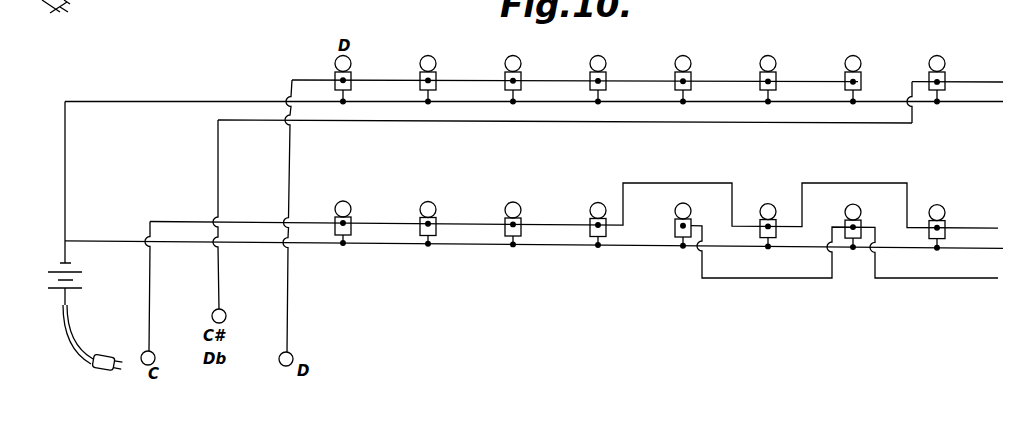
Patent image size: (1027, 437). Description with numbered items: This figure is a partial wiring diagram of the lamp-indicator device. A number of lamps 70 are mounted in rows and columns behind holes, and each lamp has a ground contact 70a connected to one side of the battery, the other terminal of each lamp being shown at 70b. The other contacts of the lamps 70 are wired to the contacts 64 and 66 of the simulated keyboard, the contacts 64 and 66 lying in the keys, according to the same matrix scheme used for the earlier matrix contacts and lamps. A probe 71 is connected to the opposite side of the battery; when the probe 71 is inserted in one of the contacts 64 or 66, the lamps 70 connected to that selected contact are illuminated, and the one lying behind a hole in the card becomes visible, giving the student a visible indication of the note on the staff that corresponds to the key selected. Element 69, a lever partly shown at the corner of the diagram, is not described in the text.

The lamps 70 is at (618, 64).
The ground contacts 70a is at (344, 100).
The lamp socket contact 70b is at (338, 80).
The key lever 69 is at (46, 16).
The contacts 64 is at (142, 352).
The contacts 66 is at (224, 311).
The probe 71 is at (93, 367).